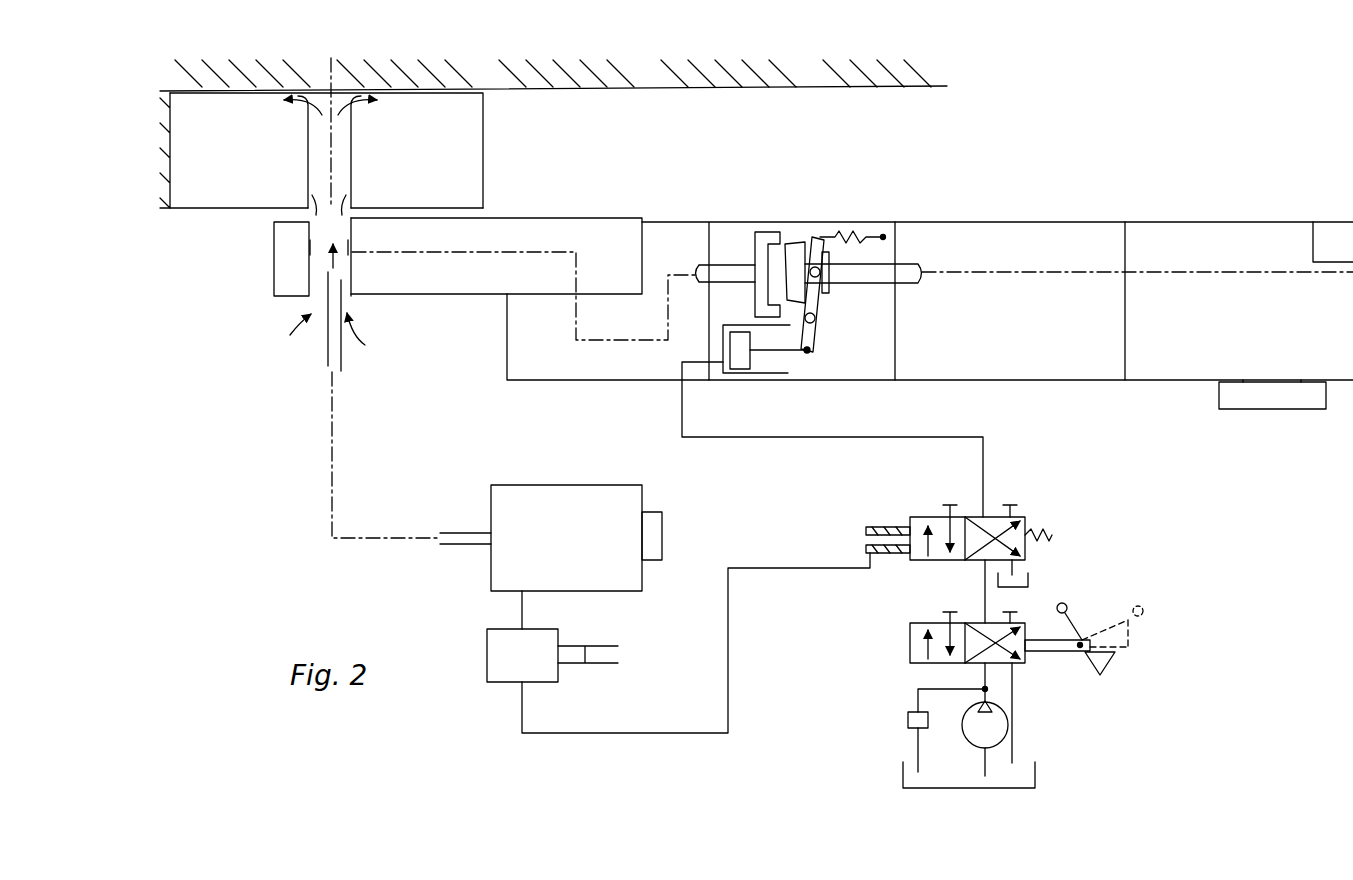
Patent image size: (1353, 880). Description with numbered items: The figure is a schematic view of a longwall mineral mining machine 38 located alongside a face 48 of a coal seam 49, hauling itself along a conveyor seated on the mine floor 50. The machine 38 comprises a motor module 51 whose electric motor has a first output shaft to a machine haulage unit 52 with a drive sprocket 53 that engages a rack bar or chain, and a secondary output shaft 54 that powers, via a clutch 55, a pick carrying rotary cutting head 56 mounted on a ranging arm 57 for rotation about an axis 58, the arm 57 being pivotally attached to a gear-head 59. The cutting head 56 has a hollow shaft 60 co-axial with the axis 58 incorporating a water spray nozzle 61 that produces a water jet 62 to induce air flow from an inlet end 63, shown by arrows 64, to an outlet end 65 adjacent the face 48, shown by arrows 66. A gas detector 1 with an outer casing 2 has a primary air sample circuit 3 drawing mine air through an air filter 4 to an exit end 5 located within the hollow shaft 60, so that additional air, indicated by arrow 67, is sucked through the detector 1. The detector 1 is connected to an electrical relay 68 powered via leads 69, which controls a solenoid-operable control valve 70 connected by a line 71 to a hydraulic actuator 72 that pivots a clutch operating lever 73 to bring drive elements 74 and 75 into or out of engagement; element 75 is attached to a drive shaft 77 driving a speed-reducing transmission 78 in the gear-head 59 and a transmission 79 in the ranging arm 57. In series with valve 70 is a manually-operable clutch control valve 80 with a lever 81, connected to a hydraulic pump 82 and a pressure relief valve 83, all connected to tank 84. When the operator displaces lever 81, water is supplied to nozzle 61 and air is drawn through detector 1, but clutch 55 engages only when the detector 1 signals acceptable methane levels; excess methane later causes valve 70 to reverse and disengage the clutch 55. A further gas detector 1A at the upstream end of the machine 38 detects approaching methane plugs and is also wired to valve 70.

The gas detector 1 is at (568, 480).
The further gas detector 1A is at (1336, 234).
The outer casing 2 is at (607, 484).
The primary air sample circuit 3 is at (349, 368).
The air filter 4 is at (660, 530).
The exit end 5 is at (348, 282).
The longwall mineral mining machine 38 is at (935, 212).
The face 48 is at (683, 88).
The coal seam 49 is at (940, 70).
The mine floor 50 is at (220, 323).
The motor module 51 is at (1023, 331).
The machine haulage unit 52 is at (1268, 323).
The drive sprocket 53 is at (1228, 398).
The secondary output shaft 54 is at (925, 263).
The clutch 55 is at (790, 218).
The rotary cutting head 56 is at (462, 138).
The ranging arm 57 is at (502, 218).
The axis 58 is at (334, 73).
The gear-head 59 is at (660, 224).
The hollow shaft 60 is at (353, 148).
The water spray nozzle 61 is at (309, 247).
The water jet 62 is at (308, 192).
The inlet end 63 is at (311, 296).
The arrows 64 is at (289, 336).
The outlet end 65 is at (312, 124).
The arrows 66 is at (280, 104).
The arrow 67 is at (352, 265).
The electrical relay 68 is at (510, 672).
The leads 69 is at (585, 665).
The solenoid-operable control valve 70 is at (918, 517).
The line 71 is at (870, 438).
The hydraulic actuator 72 is at (740, 373).
The clutch operating lever 73 is at (815, 325).
The drive element 74 is at (795, 242).
The drive element 75 is at (770, 233).
The drive shaft 77 is at (726, 264).
The speed-reducing transmission 78 is at (620, 330).
The transmission 79 is at (525, 250).
The manually-operable clutch control valve 80 is at (910, 646).
The manually operable lever 81 is at (1067, 606).
The hydraulic pump 82 is at (1000, 722).
The pressure relief valve 83 is at (908, 720).
The tank 84 is at (1030, 582).